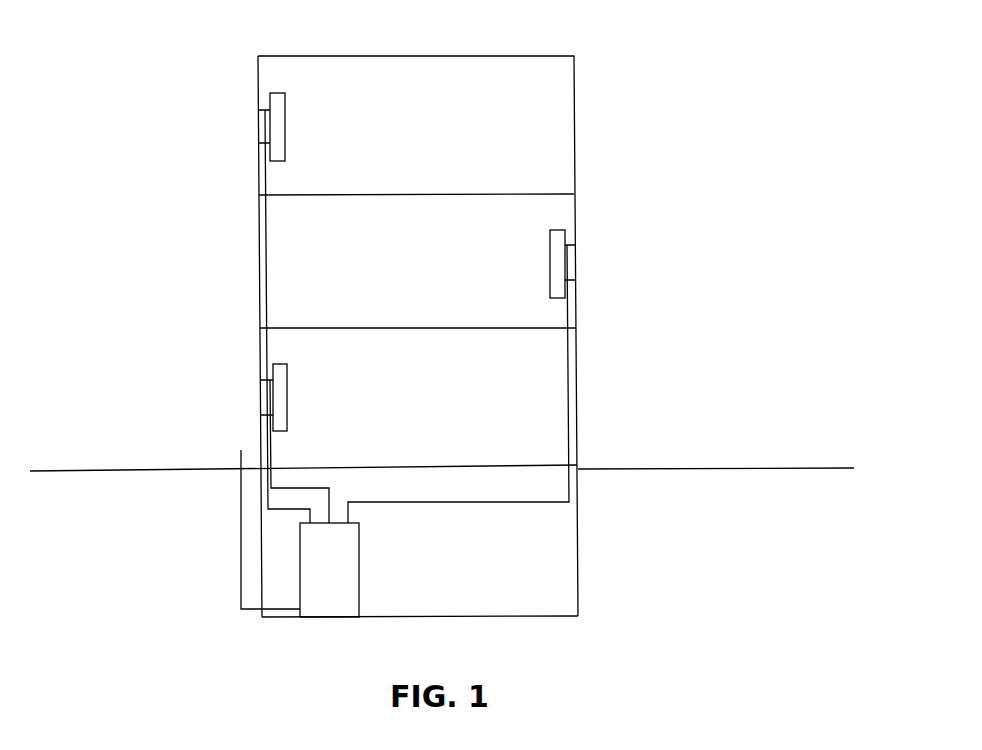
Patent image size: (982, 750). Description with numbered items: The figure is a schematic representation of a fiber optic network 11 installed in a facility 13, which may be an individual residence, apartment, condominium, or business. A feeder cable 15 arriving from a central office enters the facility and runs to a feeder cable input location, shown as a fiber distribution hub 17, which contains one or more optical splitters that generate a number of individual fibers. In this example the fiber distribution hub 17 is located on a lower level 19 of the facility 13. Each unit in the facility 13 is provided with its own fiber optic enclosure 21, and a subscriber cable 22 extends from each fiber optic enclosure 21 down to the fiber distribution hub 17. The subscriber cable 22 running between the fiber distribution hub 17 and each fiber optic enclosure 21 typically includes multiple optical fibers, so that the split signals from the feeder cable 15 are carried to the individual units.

The fiber optic network 11 is at (92, 164).
The facility 13 is at (575, 97).
The feeder cable 15 is at (241, 503).
The fiber distribution hub 17 is at (359, 572).
The lower level 19 is at (578, 563).
The fiber optic enclosure 21 is at (310, 136).
The subscriber cable 22 is at (265, 262).